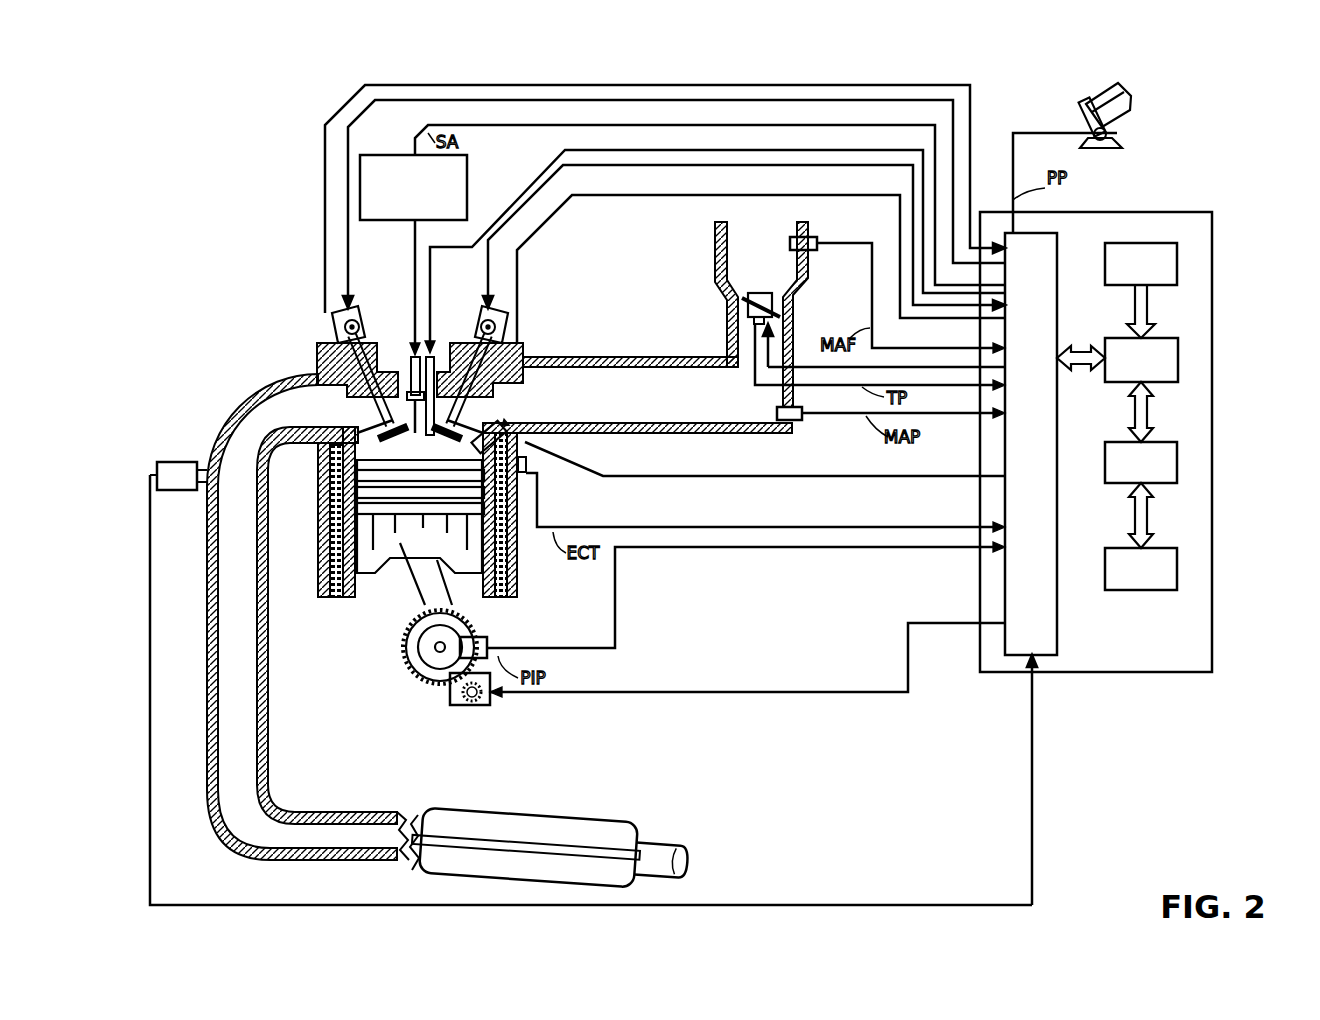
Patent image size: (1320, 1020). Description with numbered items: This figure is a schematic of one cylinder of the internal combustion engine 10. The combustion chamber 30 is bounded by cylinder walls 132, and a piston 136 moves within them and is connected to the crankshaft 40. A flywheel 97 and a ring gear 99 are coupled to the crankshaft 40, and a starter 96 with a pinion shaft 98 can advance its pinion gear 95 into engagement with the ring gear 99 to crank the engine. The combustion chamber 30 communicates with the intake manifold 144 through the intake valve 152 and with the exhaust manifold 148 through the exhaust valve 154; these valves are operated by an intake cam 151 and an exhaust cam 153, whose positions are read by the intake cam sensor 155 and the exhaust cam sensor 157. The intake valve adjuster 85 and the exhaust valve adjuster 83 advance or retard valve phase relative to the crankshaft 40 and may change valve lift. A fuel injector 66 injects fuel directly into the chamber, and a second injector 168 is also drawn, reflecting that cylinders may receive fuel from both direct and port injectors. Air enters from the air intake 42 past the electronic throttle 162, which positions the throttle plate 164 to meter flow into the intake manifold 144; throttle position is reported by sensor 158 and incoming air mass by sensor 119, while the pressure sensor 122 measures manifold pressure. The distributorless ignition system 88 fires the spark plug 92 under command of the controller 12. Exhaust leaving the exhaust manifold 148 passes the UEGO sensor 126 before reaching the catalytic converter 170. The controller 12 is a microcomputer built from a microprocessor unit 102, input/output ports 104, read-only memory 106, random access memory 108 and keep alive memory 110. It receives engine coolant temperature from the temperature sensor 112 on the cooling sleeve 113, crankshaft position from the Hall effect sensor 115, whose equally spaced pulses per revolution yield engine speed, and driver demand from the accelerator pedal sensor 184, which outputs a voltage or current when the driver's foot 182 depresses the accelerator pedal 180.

The internal combustion engine 10 is at (251, 297).
The controller 12 is at (1200, 212).
The combustion chamber 30 is at (418, 443).
The crankshaft 40 is at (424, 677).
The air intake 42 is at (745, 270).
The fuel injector 66 is at (535, 444).
The exhaust valve adjuster 83 is at (357, 283).
The intake valve adjuster 85 is at (500, 337).
The distributorless ignition system 88 is at (376, 156).
The spark plug 92 is at (412, 356).
The pinion gear 95 is at (480, 704).
The starter 96 is at (488, 706).
The flywheel 97 is at (413, 645).
The pinion shaft 98 is at (466, 704).
The ring gear 99 is at (437, 688).
The microprocessor unit 102 is at (1178, 358).
The input/output ports 104 is at (1057, 245).
The read-only memory 106 is at (1177, 262).
The random access memory 108 is at (1177, 462).
The keep alive memory 110 is at (1177, 568).
The temperature sensor 112 is at (532, 470).
The cooling sleeve 113 is at (508, 548).
The Hall effect sensor 115 is at (488, 640).
The air mass sensor 119 is at (806, 252).
The pressure sensor 122 is at (803, 421).
The UEGO sensor 126 is at (156, 468).
The cylinder walls 132 is at (357, 588).
The piston 136 is at (398, 583).
The intake manifold 144 is at (682, 410).
The exhaust manifold 148 is at (272, 415).
The intake cam 151 is at (478, 313).
The intake valve 152 is at (472, 420).
The exhaust cam 153 is at (363, 303).
The exhaust valve 154 is at (333, 380).
The intake cam sensor 155 is at (505, 330).
The exhaust cam sensor 157 is at (340, 318).
The throttle position sensor 158 is at (736, 325).
The electronic throttle 162 is at (772, 300).
The throttle plate 164 is at (745, 305).
The direct fuel injector 168 is at (433, 356).
The catalytic converter 170 is at (430, 808).
The accelerator pedal 180 is at (1082, 113).
The driver's foot 182 is at (1130, 97).
The accelerator pedal sensor 184 is at (1122, 137).